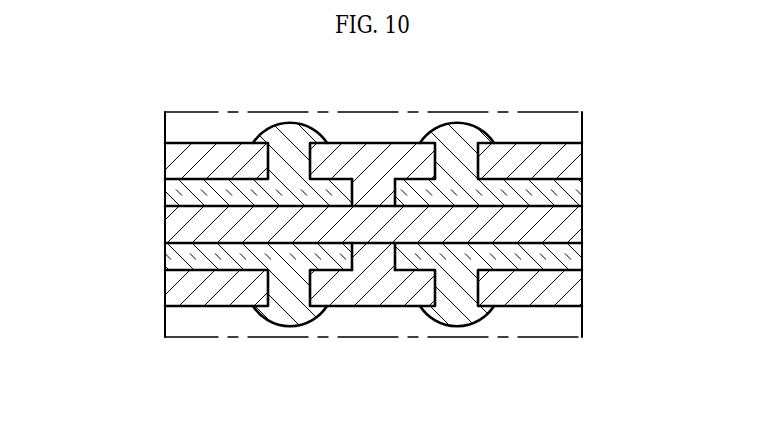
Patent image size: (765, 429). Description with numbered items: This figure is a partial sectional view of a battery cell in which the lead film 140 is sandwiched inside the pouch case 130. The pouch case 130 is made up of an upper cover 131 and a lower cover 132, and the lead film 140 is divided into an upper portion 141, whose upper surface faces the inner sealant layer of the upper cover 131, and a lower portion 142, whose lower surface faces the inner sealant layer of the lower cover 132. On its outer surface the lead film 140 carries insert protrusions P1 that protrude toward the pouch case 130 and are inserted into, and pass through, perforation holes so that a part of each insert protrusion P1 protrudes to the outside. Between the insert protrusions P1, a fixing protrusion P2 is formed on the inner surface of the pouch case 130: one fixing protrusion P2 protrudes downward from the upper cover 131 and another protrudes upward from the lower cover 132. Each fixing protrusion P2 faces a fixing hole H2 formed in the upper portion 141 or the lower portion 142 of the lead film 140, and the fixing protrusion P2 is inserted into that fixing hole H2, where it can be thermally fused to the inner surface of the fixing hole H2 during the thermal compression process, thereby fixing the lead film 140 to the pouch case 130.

The pouch case 130 is at (382, 224).
The upper cover 131 is at (576, 160).
The lower cover 132 is at (399, 288).
The lead film 140 is at (382, 224).
The upper portion 141 is at (170, 194).
The lower portion 142 is at (108, 183).
The insert protrusion P1 is at (457, 326).
The fixing protrusion P2 is at (352, 258).
The fixing hole H2 is at (395, 252).